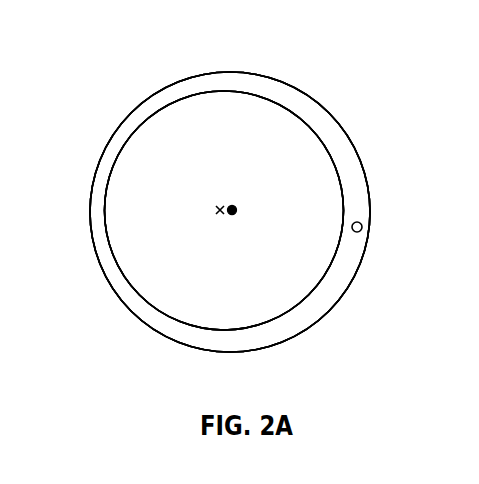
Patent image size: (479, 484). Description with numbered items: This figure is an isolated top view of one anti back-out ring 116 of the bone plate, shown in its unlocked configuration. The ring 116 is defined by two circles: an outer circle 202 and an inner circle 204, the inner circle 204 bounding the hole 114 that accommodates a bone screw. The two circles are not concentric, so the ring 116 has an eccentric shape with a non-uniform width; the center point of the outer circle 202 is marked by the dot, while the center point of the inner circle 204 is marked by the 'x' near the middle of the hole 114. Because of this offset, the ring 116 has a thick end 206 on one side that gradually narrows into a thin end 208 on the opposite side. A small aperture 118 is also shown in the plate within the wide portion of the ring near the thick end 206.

The hole 114 is at (127, 220).
The anti back-out ring 116 is at (323, 116).
The aperture 118 is at (363, 227).
The outer circle 202 is at (132, 317).
The inner circle 204 is at (197, 329).
The thick end 206 is at (338, 278).
The thin end 208 is at (118, 135).